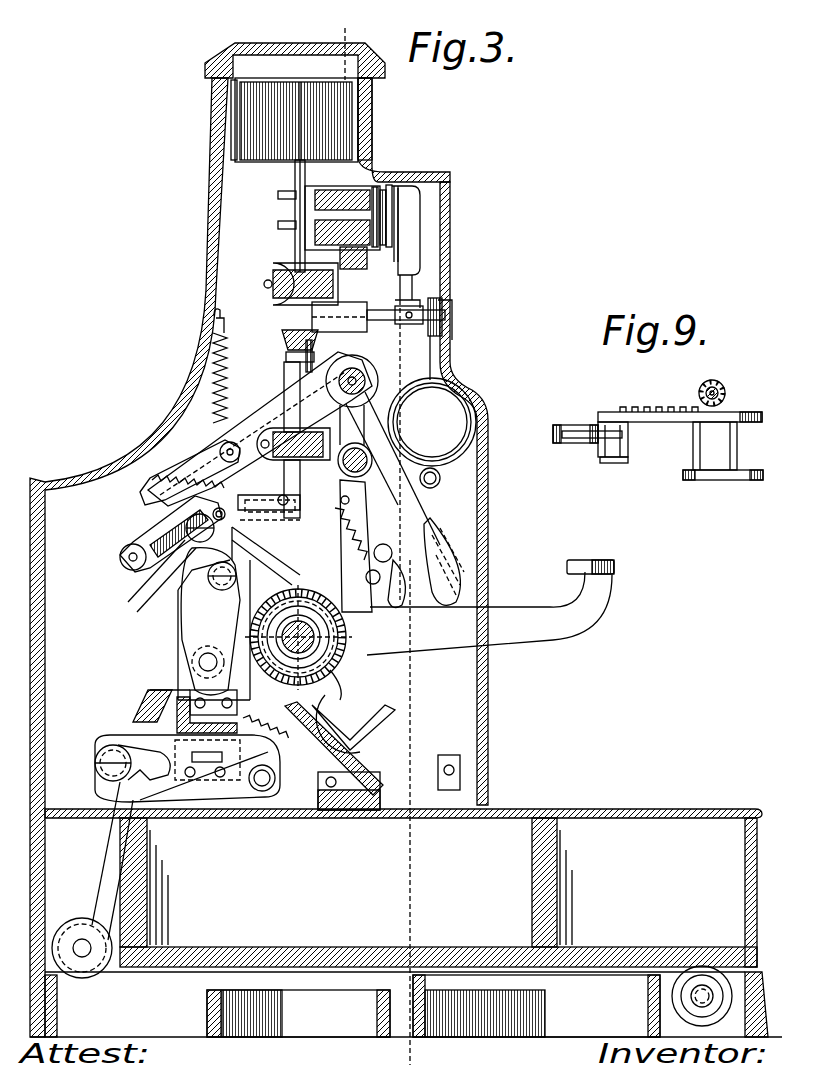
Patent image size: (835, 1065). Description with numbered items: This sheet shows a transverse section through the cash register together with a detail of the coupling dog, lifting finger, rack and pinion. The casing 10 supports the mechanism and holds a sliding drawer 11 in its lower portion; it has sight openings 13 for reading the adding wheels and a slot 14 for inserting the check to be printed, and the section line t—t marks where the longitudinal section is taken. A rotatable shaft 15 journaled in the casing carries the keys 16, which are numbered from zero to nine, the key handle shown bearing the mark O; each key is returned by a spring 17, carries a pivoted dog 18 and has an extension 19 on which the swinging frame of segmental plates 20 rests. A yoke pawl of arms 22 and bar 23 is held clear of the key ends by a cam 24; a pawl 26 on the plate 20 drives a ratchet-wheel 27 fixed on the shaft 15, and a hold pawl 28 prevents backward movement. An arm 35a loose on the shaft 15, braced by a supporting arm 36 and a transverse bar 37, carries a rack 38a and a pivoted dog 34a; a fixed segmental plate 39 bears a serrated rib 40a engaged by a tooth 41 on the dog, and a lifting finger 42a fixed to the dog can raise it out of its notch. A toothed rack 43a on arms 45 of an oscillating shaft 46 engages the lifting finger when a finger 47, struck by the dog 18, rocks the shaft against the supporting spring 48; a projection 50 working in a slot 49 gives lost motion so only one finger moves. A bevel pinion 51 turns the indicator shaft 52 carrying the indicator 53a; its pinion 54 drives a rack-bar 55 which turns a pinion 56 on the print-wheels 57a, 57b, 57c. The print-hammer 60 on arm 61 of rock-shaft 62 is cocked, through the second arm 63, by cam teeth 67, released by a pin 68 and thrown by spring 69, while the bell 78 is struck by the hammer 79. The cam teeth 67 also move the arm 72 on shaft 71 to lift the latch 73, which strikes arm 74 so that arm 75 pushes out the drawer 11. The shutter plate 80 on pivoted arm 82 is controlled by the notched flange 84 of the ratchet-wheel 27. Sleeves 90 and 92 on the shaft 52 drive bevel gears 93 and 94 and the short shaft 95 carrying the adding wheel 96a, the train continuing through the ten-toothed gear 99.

In FIG. 3, the section line t— t is at (342, 44).
In FIG. 3, the casing 10 is at (45, 643).
In FIG. 3, the drawer 11 is at (406, 923).
In FIG. 3, the sight openings 13 is at (448, 296).
In FIG. 3, the slot 14 is at (393, 172).
In FIG. 3, the shaft 15 is at (300, 638).
In FIG. 3, the keys 16 is at (489, 681).
In FIG. 3, the springs 17 is at (355, 776).
In FIG. 3, the dog 18 is at (405, 522).
In FIG. 3, the extension 19 is at (175, 690).
In FIG. 3, the segmental plates 20 is at (185, 618).
In FIG. 3, the arms 22 is at (185, 642).
In FIG. 3, the longitudinal bar 23 is at (150, 706).
In FIG. 3, the incline or cam 24 is at (177, 718).
In FIG. 3, the pawl 26 is at (210, 621).
In FIG. 3, the ratchet-wheel 27 is at (350, 670).
In FIG. 3, the hold pawl 28 is at (262, 562).
In FIG. 3, the dog 34a is at (190, 592).
In FIG. 9, the dog 34a is at (560, 425).
In FIG. 3, the arm 35a is at (282, 500).
In FIG. 9, the arm 35a is at (752, 423).
In FIG. 3, the supporting arm 36 is at (356, 456).
In FIG. 9, the supporting arm 36 is at (746, 481).
In FIG. 3, the transverse bar 37 is at (270, 514).
In FIG. 9, the transverse bar 37 is at (715, 446).
In FIG. 9, the rack 38a is at (676, 408).
In FIG. 3, the fixed segmental plate 39 is at (160, 534).
In FIG. 3, the serrated rib 40a is at (172, 560).
In FIG. 3, the tooth 41 is at (165, 596).
In FIG. 9, the tooth 41 is at (575, 444).
In FIG. 3, the lifting finger 42a is at (192, 510).
In FIG. 9, the lifting finger 42a is at (620, 458).
In FIG. 3, the toothed rib or rack 43a is at (168, 452).
In FIG. 3, the arms 45 is at (260, 429).
In FIG. 3, the shaft 46 is at (380, 392).
In FIG. 3, the fingers 47 is at (393, 468).
In FIG. 3, the supporting spring 48 is at (216, 380).
In FIG. 3, the slot 49 is at (358, 372).
In FIG. 3, the projection 50 is at (352, 376).
In FIG. 9, the bevel pinion 51 is at (706, 392).
In FIG. 3, the indicator shaft 52 is at (296, 178).
In FIG. 9, the indicator shaft 52 is at (716, 384).
In FIG. 3, the indicator 53a is at (240, 152).
In FIG. 3, the pinion 54 is at (282, 195).
In FIG. 3, the rack-bar 55 is at (330, 196).
In FIG. 3, the pinion 56 is at (388, 192).
In FIG. 3, the print-wheel 57a is at (390, 242).
In FIG. 3, the print-wheel 57b is at (384, 214).
In FIG. 3, the print-wheel 57c is at (376, 192).
In FIG. 3, the print-hammer or platen 60 is at (410, 256).
In FIG. 3, the arm 61 is at (410, 291).
In FIG. 3, the rock-shaft 62 is at (370, 456).
In FIG. 3, the second arm 63 is at (349, 499).
In FIG. 3, the cam teeth 67 is at (360, 706).
In FIG. 3, the pin 68 is at (268, 545).
In FIG. 3, the spring 69 is at (352, 518).
In FIG. 3, the shaft 71 is at (268, 786).
In FIG. 3, the arm 72 is at (284, 742).
In FIG. 3, the latch 73 is at (192, 782).
In FIG. 3, the arm of elbow lever 74 is at (145, 760).
In FIG. 3, the arm of elbow lever 75 is at (100, 830).
In FIG. 3, the alarm bell 78 is at (432, 422).
In FIG. 3, the bell hammer 79 is at (438, 476).
In FIG. 3, the shutter plate 80 is at (355, 92).
In FIG. 3, the pivoted arm 82 is at (323, 355).
In FIG. 3, the notched flange 84 is at (345, 690).
In FIG. 3, the sleeve 90 is at (286, 372).
In FIG. 3, the sleeve 92 is at (288, 355).
In FIG. 3, the bevel gear 93 is at (285, 336).
In FIG. 3, the second bevel gear 94 is at (300, 318).
In FIG. 3, the short shaft 95 is at (436, 330).
In FIG. 3, the adding wheel 96a is at (448, 314).
In FIG. 3, the ten-toothed gear 99 is at (442, 332).
In FIG. 3, the handle O is at (590, 557).